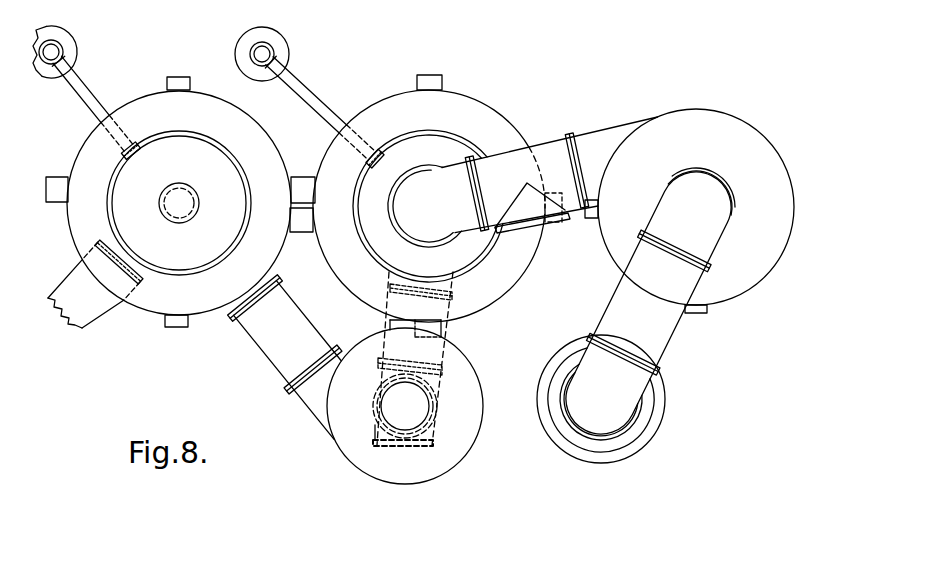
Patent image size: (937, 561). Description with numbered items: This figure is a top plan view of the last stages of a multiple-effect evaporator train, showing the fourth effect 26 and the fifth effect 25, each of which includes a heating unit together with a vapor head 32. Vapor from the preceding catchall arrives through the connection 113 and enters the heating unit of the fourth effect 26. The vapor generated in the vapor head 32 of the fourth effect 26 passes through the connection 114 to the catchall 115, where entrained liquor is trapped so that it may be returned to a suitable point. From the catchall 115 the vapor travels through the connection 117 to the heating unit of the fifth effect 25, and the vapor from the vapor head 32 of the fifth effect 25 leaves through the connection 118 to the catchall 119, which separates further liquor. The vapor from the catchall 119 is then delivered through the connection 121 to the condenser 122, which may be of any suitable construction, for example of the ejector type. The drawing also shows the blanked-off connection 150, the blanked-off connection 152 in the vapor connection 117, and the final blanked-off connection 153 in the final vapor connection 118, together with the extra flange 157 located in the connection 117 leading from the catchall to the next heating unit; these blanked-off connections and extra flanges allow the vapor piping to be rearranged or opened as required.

The fifth effect 25 is at (488, 99).
The fourth effect 26 is at (222, 80).
The vapor head 32 is at (84, 236).
The connection 113 is at (88, 326).
The connection 114 is at (272, 366).
The catchall 115 is at (353, 466).
The connection 117 is at (389, 322).
The connection 118 is at (541, 143).
The catchall 119 is at (689, 211).
The connection 121 is at (608, 303).
The condenser 122 is at (572, 455).
The blanked-off connection 150 is at (231, 308).
The blanked-off connection 152 is at (394, 447).
The final blanked-off connection 153 is at (556, 226).
The extra flange 157 is at (444, 370).